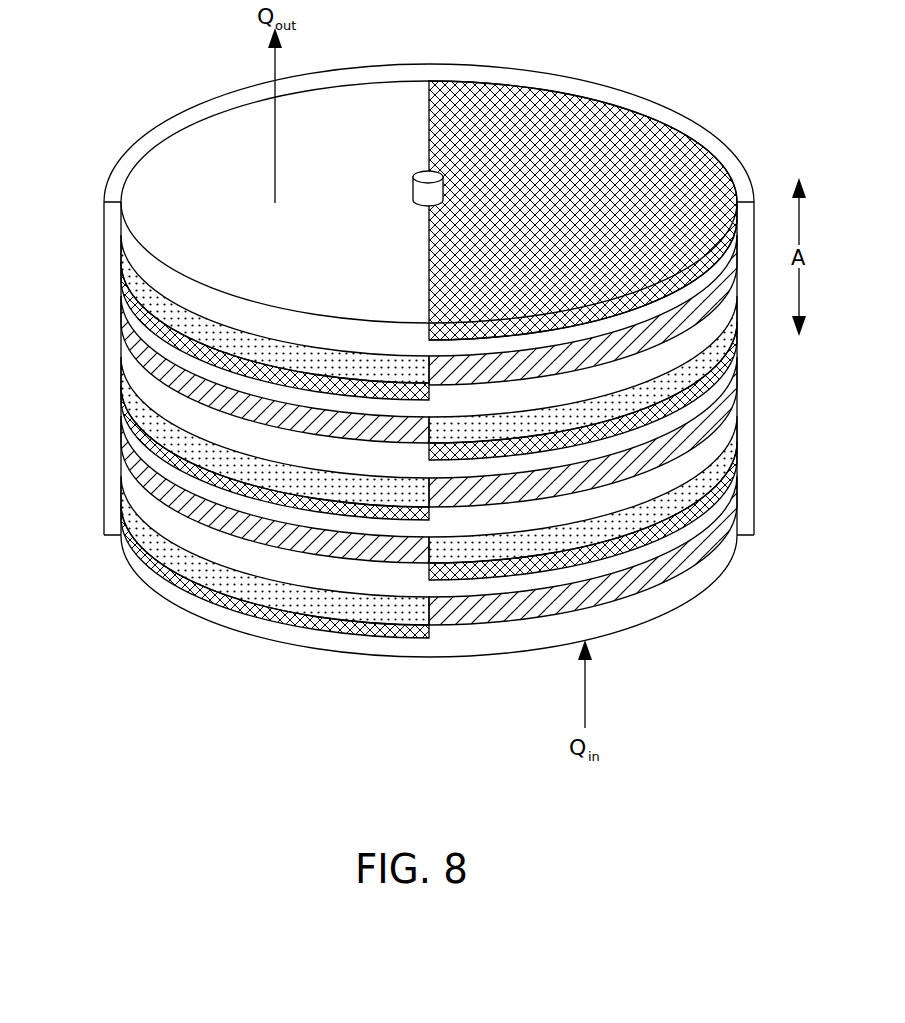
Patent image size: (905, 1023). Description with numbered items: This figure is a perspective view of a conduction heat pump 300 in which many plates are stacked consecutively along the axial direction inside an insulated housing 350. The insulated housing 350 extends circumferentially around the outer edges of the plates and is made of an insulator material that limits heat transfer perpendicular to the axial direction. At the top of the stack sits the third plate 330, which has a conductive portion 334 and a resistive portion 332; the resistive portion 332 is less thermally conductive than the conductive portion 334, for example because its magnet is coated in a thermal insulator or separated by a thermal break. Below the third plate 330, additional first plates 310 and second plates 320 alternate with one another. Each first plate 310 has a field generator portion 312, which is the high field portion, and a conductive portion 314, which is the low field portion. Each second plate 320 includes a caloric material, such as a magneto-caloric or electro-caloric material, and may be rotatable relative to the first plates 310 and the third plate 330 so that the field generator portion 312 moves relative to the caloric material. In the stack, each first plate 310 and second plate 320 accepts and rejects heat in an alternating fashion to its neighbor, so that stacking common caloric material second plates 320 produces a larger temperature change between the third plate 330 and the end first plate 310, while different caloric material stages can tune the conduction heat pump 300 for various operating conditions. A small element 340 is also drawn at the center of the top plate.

The conduction heat pump 300 is at (169, 93).
The first plate 310 is at (133, 318).
The field generator portion 312 is at (220, 597).
The conductive portion 314 is at (658, 600).
The second plate 320 is at (133, 288).
The third plate 330 is at (133, 258).
The resistive portion 332 is at (532, 120).
The conductive portion 334 is at (390, 118).
The sensor / fitting 340 is at (414, 188).
The insulated housing 350 is at (702, 138).